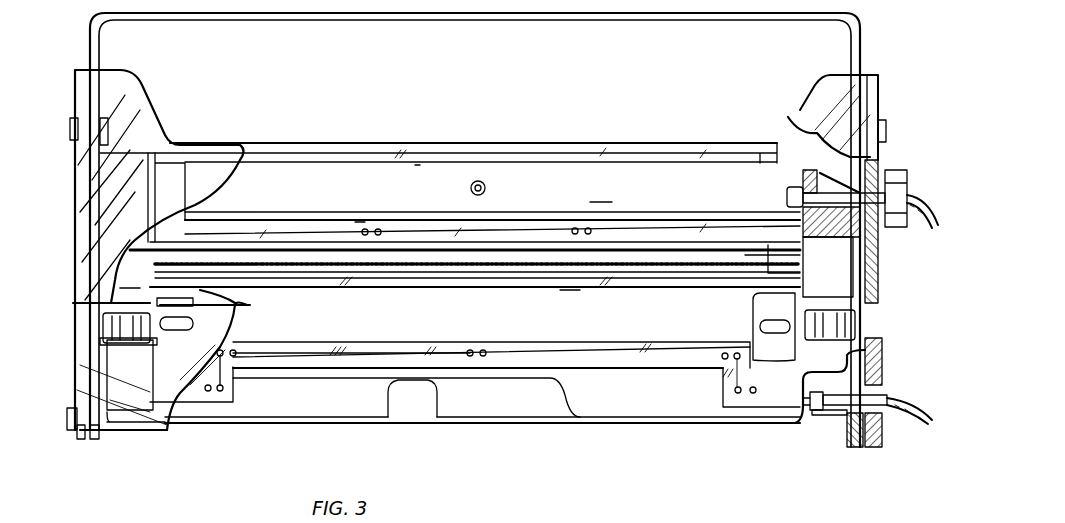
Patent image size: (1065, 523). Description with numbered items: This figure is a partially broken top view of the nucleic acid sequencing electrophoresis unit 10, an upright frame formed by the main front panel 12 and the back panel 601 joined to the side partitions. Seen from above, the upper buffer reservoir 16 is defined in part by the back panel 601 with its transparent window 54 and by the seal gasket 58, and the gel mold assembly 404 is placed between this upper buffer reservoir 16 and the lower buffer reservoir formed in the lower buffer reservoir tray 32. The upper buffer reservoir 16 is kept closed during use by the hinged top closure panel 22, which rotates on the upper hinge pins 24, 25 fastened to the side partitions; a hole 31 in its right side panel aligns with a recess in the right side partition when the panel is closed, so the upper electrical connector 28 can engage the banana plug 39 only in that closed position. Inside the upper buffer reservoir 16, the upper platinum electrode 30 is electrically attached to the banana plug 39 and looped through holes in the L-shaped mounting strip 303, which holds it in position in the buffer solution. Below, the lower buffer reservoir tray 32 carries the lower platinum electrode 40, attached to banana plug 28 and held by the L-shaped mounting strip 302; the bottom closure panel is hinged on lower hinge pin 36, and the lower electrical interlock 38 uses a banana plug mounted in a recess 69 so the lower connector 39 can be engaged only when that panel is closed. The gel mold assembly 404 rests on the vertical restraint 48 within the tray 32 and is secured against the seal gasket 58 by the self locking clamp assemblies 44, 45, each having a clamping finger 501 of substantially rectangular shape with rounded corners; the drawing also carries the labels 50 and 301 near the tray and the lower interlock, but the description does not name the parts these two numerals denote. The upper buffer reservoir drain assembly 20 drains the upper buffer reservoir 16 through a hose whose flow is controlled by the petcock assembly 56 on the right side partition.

The electrophoresis unit 10 is at (90, 45).
The main front panel 12 is at (792, 522).
The upper buffer reservoir 16 is at (602, 190).
The upper buffer reservoir drain assembly 20 is at (485, 188).
The hinged top closure panel 22 is at (879, 86).
The upper hinge pin 24 is at (891, 129).
The upper hinge pin 25 is at (72, 132).
The upper electrical connector 28 is at (788, 122).
The upper platinum electrode 30 is at (304, 231).
The hole 31 is at (887, 235).
The lower buffer reservoir tray 32 is at (587, 428).
The lower hinge pin 36 is at (71, 430).
The lower electrical interlock 38 is at (878, 390).
The banana plug 39 is at (830, 243).
The lower platinum electrode 40 is at (370, 349).
The self locking clamp assembly 44 is at (125, 345).
The self locking clamp assembly 45 is at (865, 352).
The vertical restraint 48 is at (726, 380).
The bump 50 is at (416, 403).
The transparent window 54 is at (418, 165).
The petcock assembly 56 is at (908, 170).
The seal gasket 58 is at (308, 298).
The recess 69 is at (848, 422).
The pin 301 is at (823, 417).
The L-shaped mounting strip 302 is at (438, 340).
The L-shaped mounting strip 303 is at (349, 222).
The gel mold assembly 404 is at (571, 296).
The clamping finger 501 is at (245, 306).
The back panel 601 is at (320, 143).